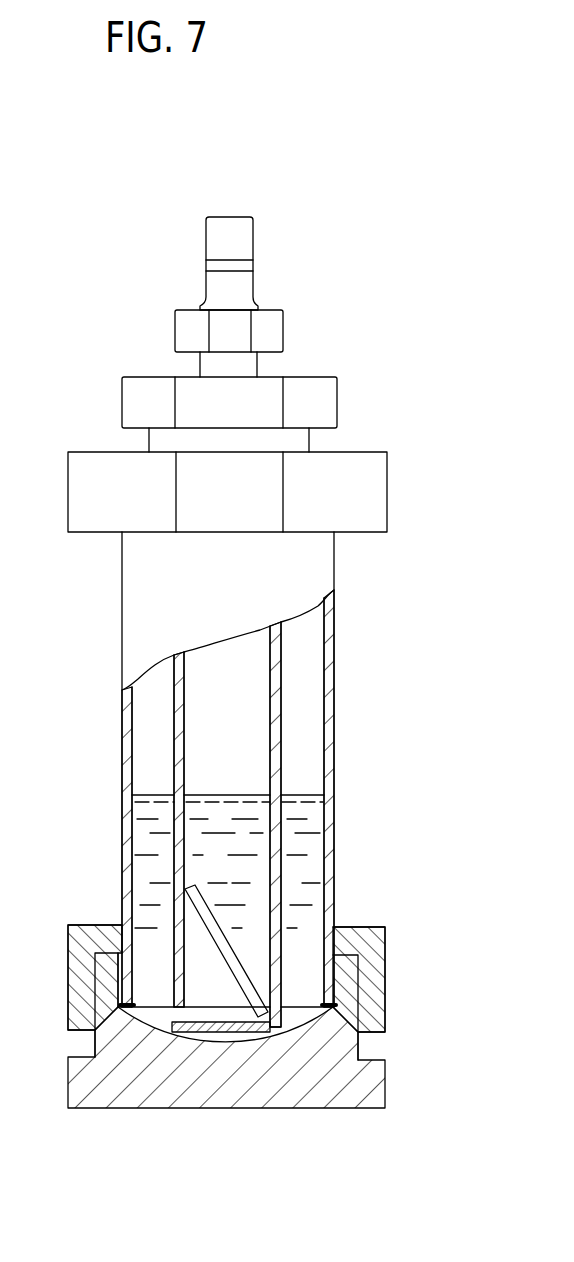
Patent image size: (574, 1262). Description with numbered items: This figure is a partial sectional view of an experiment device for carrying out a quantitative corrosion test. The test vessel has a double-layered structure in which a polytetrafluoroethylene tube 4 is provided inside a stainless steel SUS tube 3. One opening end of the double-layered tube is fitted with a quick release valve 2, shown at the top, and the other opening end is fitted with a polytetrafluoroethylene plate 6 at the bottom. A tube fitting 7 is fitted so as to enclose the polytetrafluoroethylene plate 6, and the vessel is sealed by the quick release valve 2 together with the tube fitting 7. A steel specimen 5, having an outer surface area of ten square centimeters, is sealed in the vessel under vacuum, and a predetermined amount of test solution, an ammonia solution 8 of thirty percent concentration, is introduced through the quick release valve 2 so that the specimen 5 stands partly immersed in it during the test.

The quick release valve 2 is at (327, 402).
The SUS304 tube 3 is at (327, 787).
The polytetrafluoroethylene tube 4 is at (277, 712).
The specimen 5 is at (207, 922).
The polytetrafluoroethylene plate 6 is at (242, 1028).
The tube fitting 7 is at (370, 1007).
The ammonia solution 8 is at (253, 872).